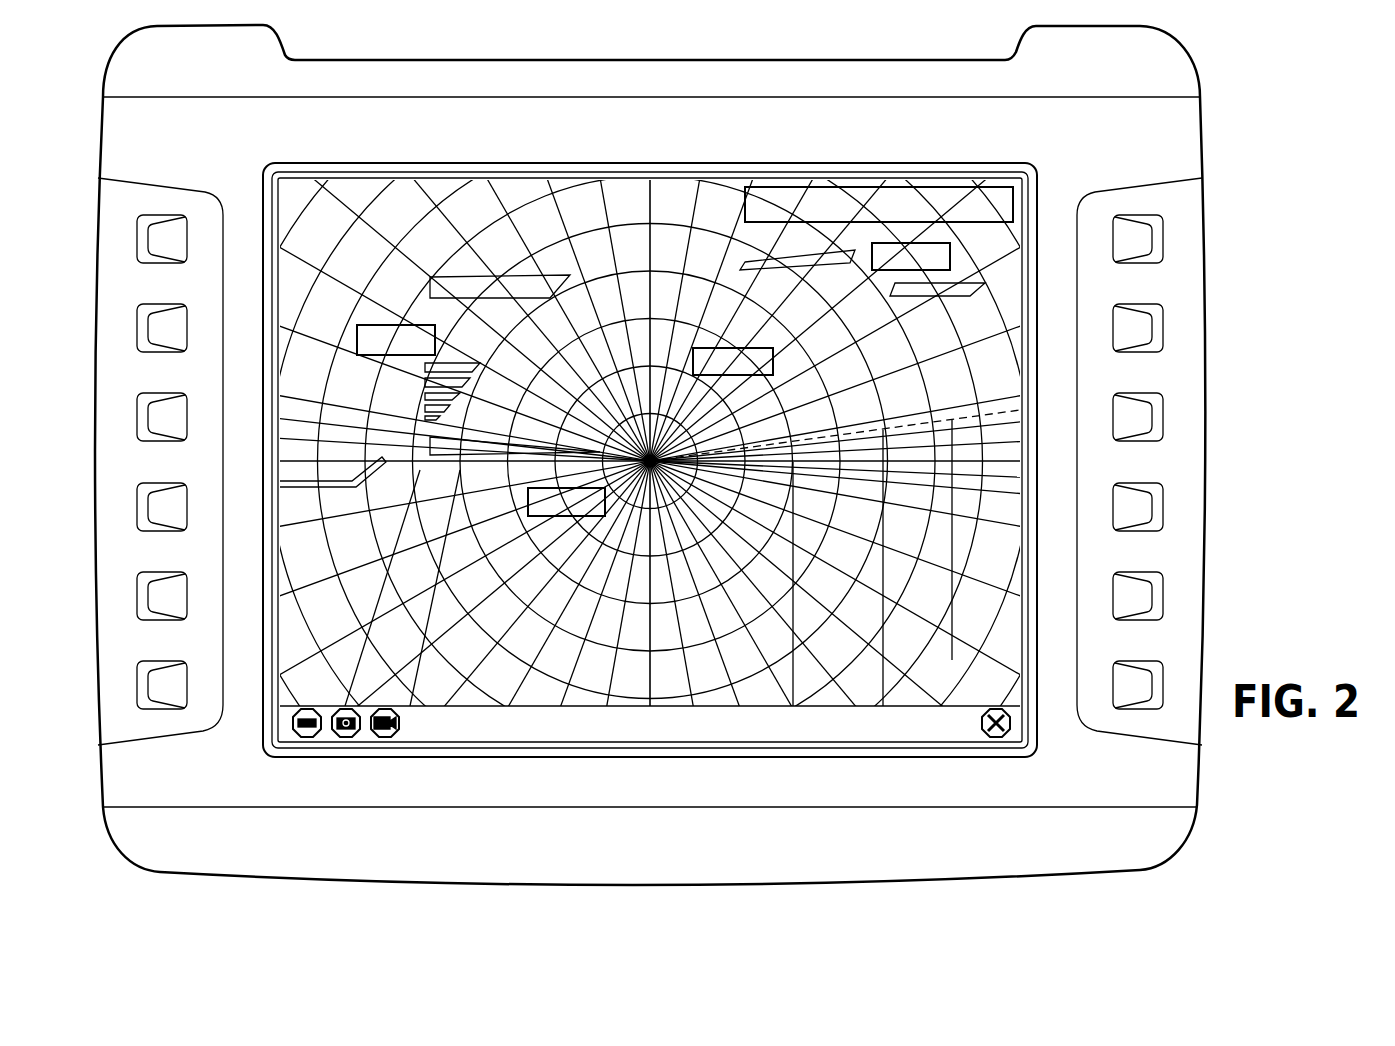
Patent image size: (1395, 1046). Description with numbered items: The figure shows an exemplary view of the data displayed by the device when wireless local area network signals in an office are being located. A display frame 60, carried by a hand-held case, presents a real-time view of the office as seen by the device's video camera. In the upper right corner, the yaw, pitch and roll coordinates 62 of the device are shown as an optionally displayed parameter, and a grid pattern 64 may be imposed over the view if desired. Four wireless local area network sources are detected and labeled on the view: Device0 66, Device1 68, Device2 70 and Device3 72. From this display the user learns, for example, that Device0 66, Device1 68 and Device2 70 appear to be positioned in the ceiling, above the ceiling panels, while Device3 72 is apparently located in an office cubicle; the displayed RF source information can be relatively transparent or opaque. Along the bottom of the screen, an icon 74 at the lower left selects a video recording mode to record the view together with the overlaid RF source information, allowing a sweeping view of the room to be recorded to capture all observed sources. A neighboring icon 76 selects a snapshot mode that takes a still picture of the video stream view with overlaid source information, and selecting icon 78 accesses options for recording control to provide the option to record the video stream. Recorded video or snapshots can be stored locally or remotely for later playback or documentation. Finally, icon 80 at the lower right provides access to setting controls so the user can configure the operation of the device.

The display frame 60 is at (245, 188).
The yaw, pitch and roll coordinates 62 is at (852, 187).
The grid pattern 64 is at (982, 490).
The Device0 66 is at (930, 243).
The Device1 68 is at (773, 352).
The Device2 70 is at (372, 325).
The Device3 72 is at (550, 516).
The icon 74 is at (305, 740).
The icon 76 is at (345, 740).
The icon 78 is at (385, 740).
The icon 80 is at (996, 740).